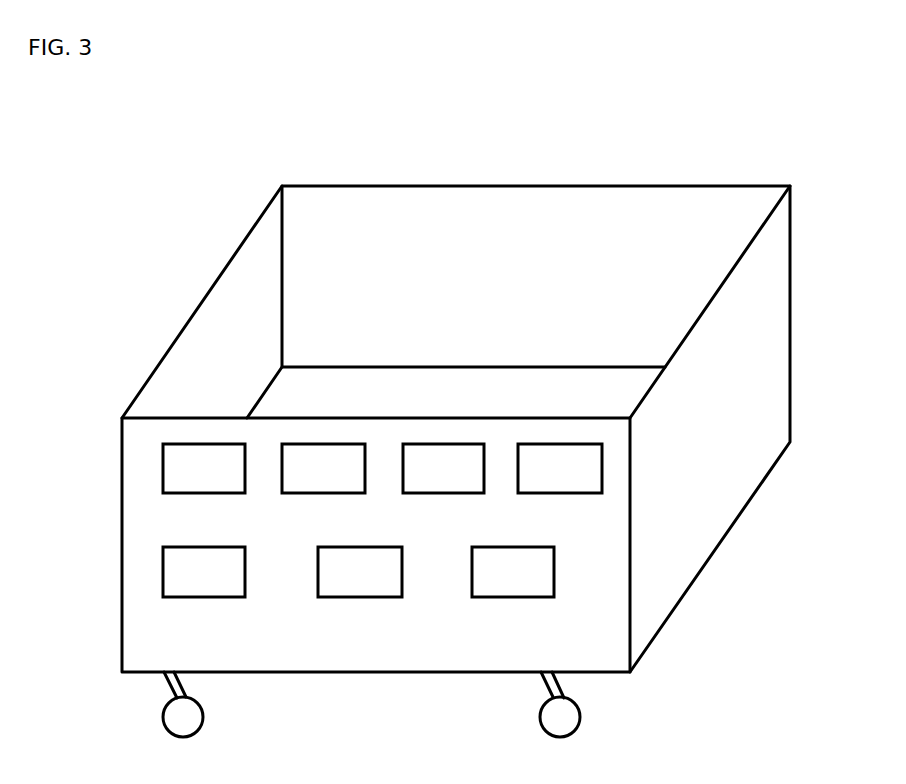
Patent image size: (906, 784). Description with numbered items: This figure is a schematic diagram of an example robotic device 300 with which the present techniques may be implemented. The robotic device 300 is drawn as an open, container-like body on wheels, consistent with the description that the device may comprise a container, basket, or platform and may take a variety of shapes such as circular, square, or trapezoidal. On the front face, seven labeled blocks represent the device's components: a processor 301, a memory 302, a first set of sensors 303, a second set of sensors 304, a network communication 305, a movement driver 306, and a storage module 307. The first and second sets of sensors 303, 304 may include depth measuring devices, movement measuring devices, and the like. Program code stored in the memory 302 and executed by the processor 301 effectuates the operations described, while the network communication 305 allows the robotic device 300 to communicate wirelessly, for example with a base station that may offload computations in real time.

The robotic device 300 is at (456, 442).
The processor 301 is at (204, 468).
The memory 302 is at (323, 468).
The first set of sensors 303 is at (443, 468).
The second set of sensors 304 is at (560, 468).
The network communication 305 is at (204, 572).
The movement driver 306 is at (360, 572).
The storage module 307 is at (513, 572).